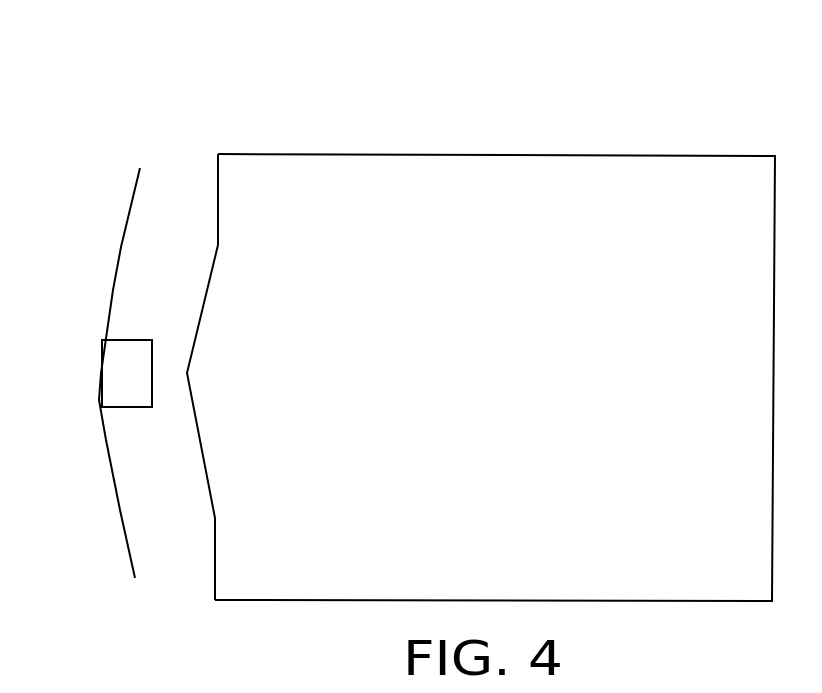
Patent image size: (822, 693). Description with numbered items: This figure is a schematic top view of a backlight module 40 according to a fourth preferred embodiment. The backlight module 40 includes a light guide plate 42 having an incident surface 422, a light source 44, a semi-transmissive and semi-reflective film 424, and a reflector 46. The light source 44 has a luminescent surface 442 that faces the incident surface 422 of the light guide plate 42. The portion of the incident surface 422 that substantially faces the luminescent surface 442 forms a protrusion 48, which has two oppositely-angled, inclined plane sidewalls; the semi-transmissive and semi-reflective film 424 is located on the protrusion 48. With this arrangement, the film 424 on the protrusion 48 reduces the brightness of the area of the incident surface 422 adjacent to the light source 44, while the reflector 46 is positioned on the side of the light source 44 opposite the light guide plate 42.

The backlight module 40 is at (358, 33).
The light guide plate 42 is at (585, 152).
The incident surface 422 is at (215, 172).
The semi-transmissive and semi-reflective film 424 is at (204, 483).
The protrusion 48 is at (202, 310).
The reflector 46 is at (120, 247).
The light source 44 is at (128, 368).
The luminescent surface 442 is at (153, 399).